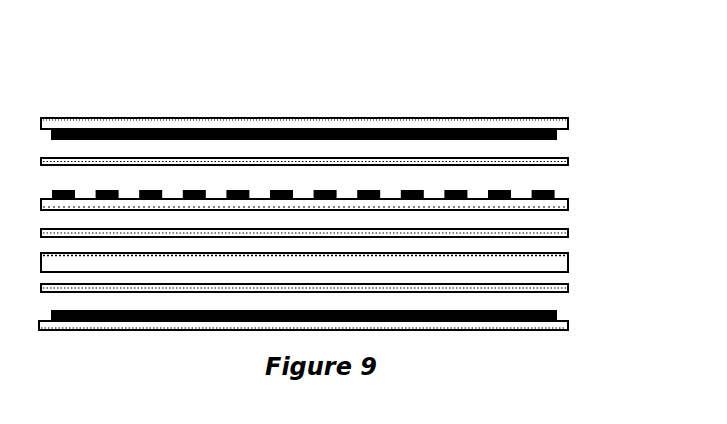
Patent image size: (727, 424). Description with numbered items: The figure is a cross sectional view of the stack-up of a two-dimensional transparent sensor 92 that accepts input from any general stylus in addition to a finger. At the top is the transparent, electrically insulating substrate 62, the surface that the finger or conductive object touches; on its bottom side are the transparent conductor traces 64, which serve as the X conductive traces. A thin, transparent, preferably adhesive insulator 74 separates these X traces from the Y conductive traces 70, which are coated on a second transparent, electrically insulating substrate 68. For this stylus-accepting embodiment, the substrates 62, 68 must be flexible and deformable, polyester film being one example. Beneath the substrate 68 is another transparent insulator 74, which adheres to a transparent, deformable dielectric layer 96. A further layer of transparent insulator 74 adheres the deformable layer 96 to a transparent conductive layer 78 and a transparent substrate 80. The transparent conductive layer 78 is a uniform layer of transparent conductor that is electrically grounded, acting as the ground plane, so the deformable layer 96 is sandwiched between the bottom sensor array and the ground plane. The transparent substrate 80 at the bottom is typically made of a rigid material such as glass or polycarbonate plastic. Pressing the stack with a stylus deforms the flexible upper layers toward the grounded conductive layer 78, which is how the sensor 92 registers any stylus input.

The sensor 92 is at (317, 74).
The transparent, electrically insulating substrate 62 is at (556, 117).
The transparent conductor traces 64 is at (556, 140).
The transparent insulator 74 is at (568, 160).
The Y conductive traces 70 is at (555, 191).
The transparent, electrically insulating substrate 68 is at (568, 207).
The transparent, deformable dielectric layer 96 is at (568, 262).
The transparent conductive layer 78 is at (557, 311).
The transparent substrate 80 is at (558, 329).